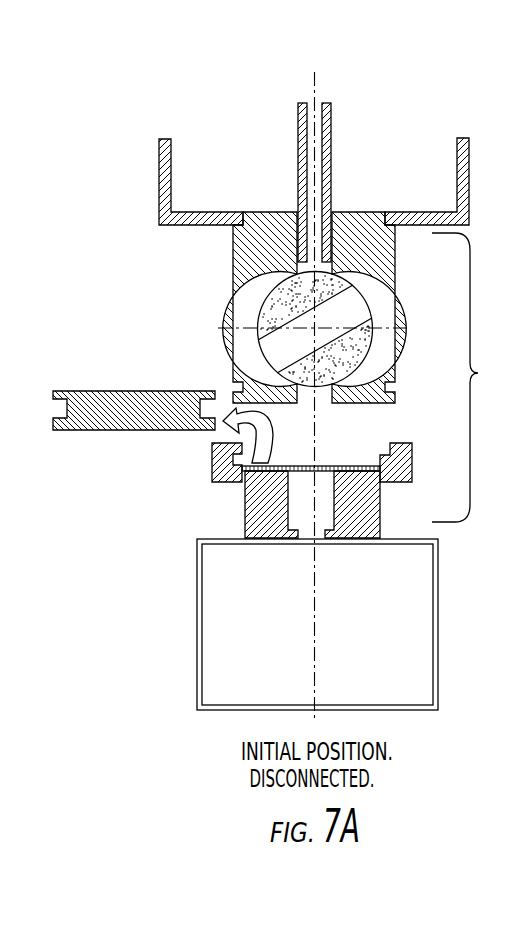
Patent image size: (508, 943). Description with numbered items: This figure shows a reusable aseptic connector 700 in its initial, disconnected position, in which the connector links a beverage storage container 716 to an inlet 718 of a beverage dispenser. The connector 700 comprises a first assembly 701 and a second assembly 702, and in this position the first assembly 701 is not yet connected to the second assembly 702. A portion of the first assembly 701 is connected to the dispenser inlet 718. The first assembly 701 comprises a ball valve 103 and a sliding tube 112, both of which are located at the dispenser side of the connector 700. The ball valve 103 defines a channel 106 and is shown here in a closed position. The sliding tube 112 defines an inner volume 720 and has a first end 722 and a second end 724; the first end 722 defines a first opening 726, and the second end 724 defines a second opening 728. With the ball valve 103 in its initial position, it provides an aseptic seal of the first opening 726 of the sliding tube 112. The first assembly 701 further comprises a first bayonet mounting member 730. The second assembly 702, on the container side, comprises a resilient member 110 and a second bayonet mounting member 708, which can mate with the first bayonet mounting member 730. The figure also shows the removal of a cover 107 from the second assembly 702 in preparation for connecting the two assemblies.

The connector 700 is at (470, 377).
The first assembly 701 is at (233, 265).
The second assembly 702 is at (212, 458).
The second bayonet mounting member 708 is at (218, 481).
The inlet 718 is at (159, 167).
The inner volume 720 is at (331, 132).
The first end 722 is at (296, 242).
The second end 724 is at (298, 118).
The first opening 726 is at (297, 271).
The second opening 728 is at (316, 93).
The first bayonet mounting member 730 is at (232, 382).
The ball valve 103 is at (278, 313).
The channel 106 is at (349, 297).
The cover 107 is at (133, 391).
The resilient member 110 is at (340, 466).
The sliding tube 112 is at (297, 187).
The beverage storage container 716 is at (225, 627).